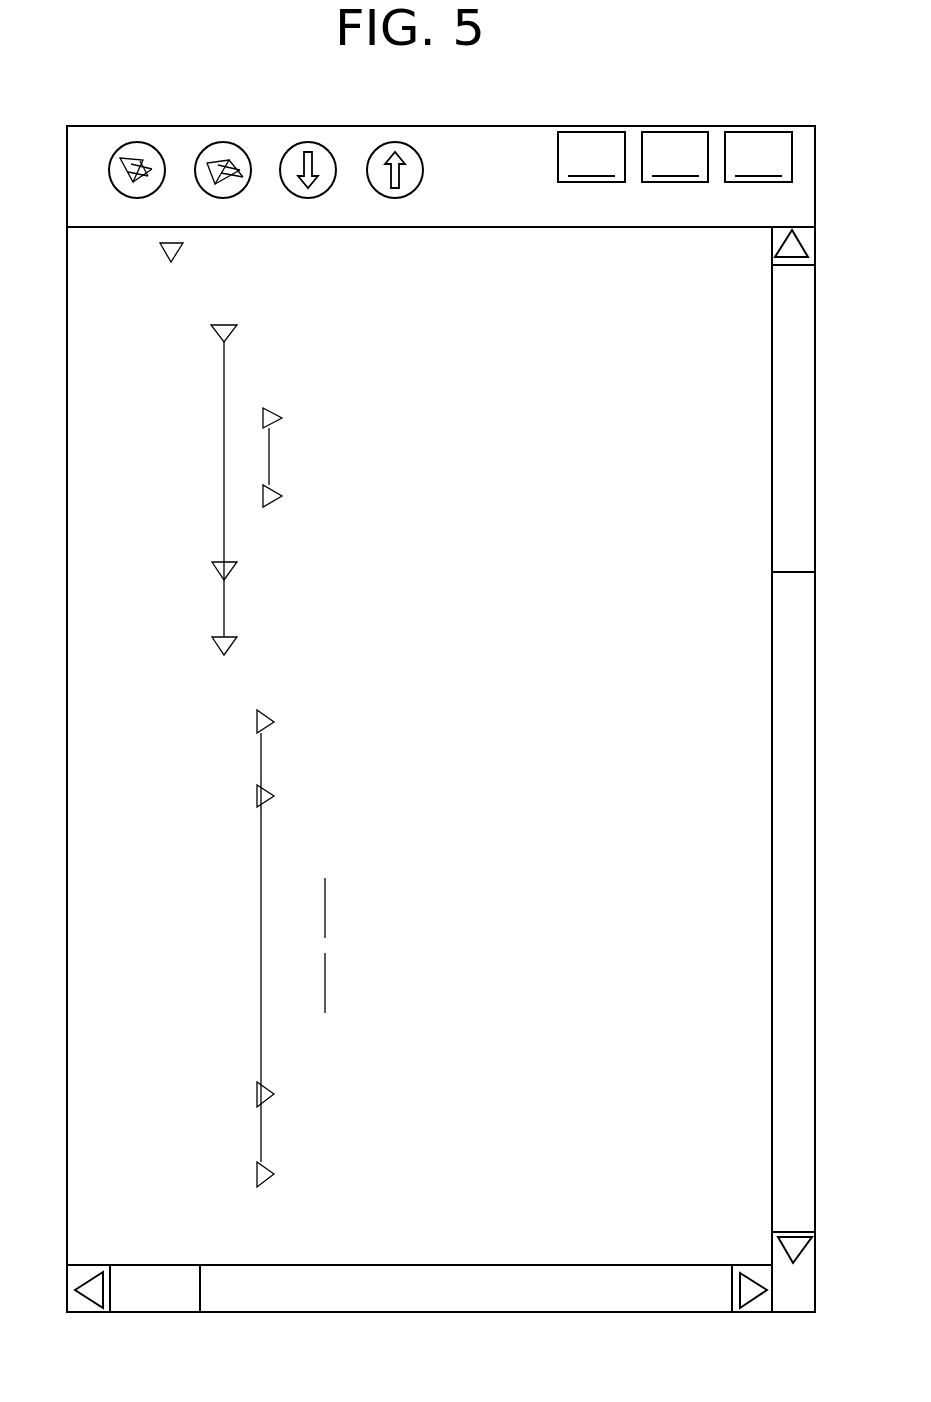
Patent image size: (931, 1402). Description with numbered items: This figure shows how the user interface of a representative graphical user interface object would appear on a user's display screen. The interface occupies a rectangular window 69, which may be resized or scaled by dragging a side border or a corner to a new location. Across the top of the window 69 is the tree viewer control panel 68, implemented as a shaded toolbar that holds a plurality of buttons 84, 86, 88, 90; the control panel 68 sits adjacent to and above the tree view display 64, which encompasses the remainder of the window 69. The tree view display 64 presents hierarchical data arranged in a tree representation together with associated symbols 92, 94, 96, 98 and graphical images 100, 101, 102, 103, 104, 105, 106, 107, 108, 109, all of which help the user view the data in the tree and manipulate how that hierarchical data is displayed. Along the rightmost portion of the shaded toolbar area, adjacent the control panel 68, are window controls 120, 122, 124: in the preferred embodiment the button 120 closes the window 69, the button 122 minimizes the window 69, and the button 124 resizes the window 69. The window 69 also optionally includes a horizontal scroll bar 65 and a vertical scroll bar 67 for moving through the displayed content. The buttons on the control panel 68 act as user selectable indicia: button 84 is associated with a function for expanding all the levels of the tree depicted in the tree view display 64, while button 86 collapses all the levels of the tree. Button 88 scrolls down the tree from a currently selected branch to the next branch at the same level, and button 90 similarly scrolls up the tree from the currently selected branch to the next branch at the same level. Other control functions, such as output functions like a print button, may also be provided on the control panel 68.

The tree view display 64 is at (419, 746).
The horizontal scroll bar 65 is at (419, 1288).
The vertical scroll bar 67 is at (793, 747).
The tree viewer control panel 68 is at (441, 211).
The window 69 is at (818, 769).
The button 84 is at (123, 182).
The button 86 is at (210, 182).
The button 88 is at (295, 182).
The button 90 is at (383, 182).
The symbol 92 is at (218, 457).
The symbol 94 is at (268, 438).
The symbol 96 is at (252, 867).
The symbol 98 is at (340, 982).
The graphical image 100 is at (344, 264).
The graphical image 101 is at (377, 341).
The graphical image 102 is at (364, 580).
The graphical image 103 is at (317, 654).
The graphical image 104 is at (431, 405).
The graphical image 105 is at (404, 482).
The graphical image 106 is at (418, 710).
The graphical image 107 is at (374, 786).
The graphical image 108 is at (342, 1083).
The graphical image 109 is at (350, 1167).
The button for closing window 120 is at (758, 157).
The button for minimizing window 122 is at (675, 157).
The button for resizing window 124 is at (591, 157).